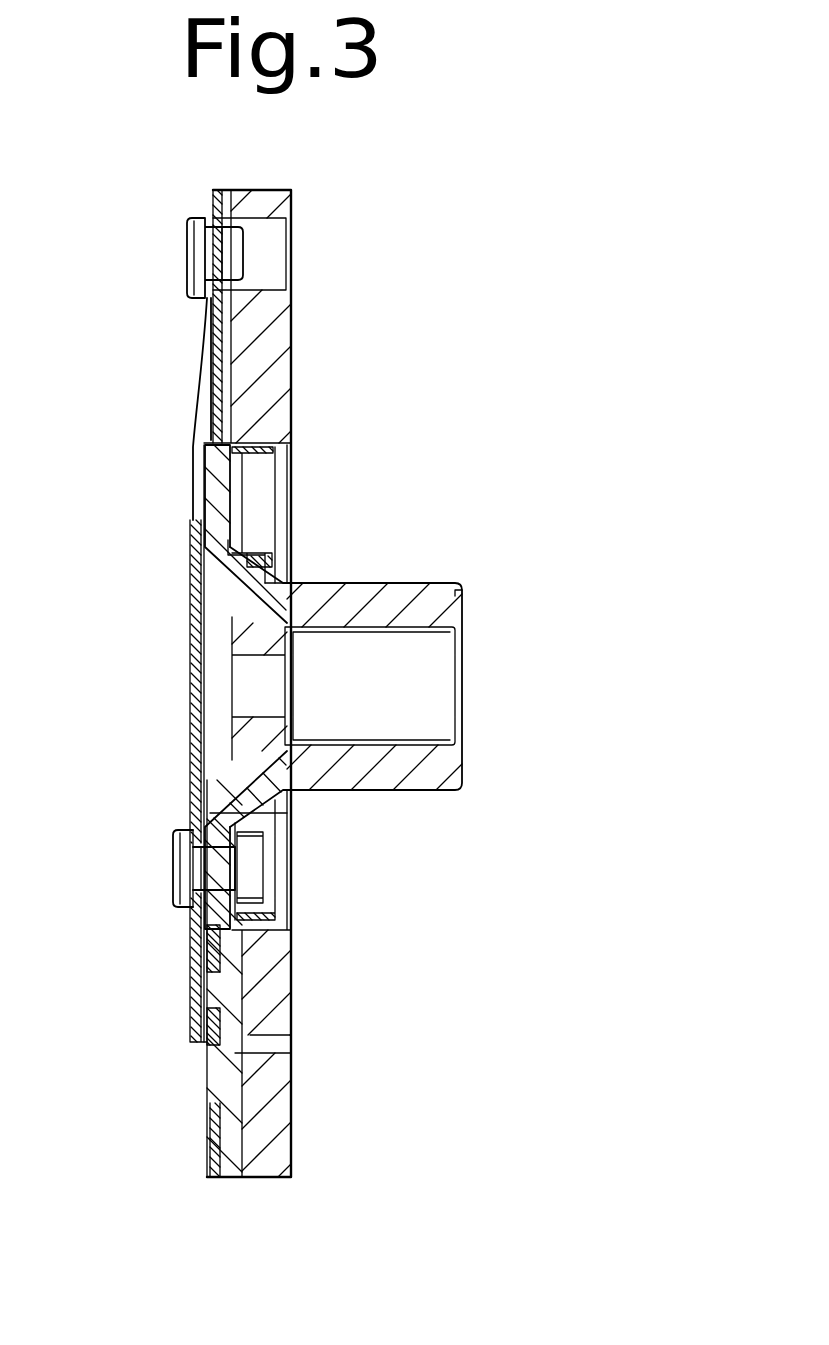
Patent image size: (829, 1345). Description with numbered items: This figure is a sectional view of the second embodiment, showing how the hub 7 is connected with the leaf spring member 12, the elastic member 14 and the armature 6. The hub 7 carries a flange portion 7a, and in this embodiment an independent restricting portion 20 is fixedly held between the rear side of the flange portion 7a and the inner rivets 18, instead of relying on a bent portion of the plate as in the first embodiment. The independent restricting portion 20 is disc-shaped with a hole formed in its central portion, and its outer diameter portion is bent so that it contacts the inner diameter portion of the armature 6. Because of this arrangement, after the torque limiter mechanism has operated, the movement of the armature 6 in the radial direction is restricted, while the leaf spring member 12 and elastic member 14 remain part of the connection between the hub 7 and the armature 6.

The armature 6 is at (268, 995).
The hub 7 is at (258, 593).
The flange portion 7a is at (214, 809).
The leaf spring member 12 is at (205, 352).
The elastic member 14 is at (228, 1168).
The inner rivets 18 is at (176, 860).
The independent restricting portion 20 is at (276, 916).